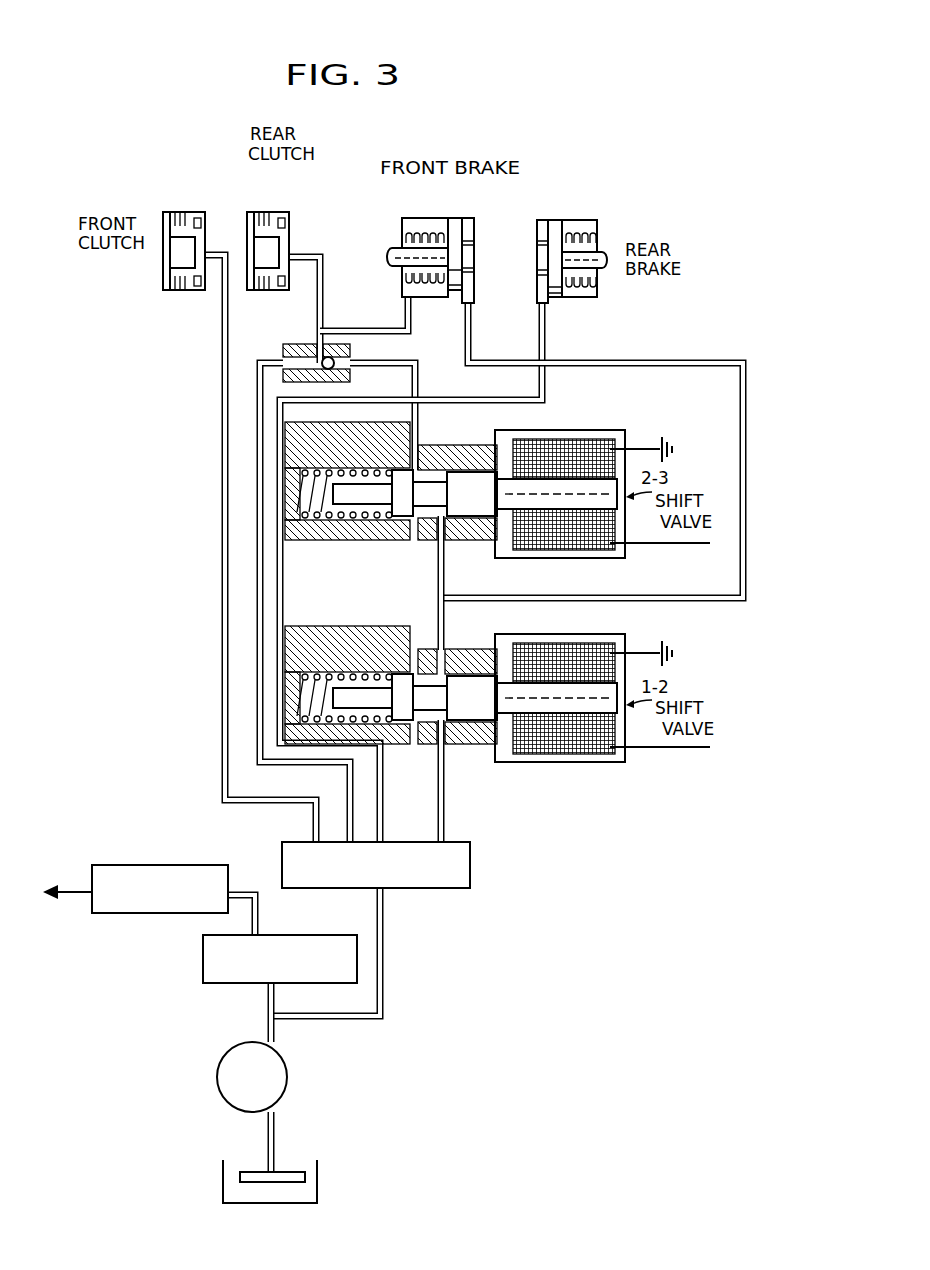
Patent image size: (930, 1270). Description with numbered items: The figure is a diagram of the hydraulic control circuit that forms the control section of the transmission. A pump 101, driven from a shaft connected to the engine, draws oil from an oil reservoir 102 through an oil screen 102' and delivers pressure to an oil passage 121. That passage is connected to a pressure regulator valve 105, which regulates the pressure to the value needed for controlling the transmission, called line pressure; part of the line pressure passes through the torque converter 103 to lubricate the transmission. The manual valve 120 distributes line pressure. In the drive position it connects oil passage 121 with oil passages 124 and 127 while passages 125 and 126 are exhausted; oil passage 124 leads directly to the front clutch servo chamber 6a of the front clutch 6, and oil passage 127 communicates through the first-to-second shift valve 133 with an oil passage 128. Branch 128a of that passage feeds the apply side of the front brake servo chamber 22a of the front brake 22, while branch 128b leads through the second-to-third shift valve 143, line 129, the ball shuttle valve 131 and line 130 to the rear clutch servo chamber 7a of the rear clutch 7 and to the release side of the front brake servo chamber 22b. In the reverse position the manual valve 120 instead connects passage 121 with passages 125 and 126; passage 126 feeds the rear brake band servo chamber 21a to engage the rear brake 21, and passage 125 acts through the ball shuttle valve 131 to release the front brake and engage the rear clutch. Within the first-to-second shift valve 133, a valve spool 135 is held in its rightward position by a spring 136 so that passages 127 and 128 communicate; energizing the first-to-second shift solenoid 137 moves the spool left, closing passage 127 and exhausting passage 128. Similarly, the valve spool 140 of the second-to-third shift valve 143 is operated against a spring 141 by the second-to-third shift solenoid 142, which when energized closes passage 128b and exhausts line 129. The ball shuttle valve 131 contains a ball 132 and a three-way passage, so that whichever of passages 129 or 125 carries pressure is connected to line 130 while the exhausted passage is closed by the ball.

The front clutch 6 is at (187, 208).
The front clutch servo chamber 6a is at (197, 242).
The rear clutch 7 is at (270, 208).
The rear clutch servo chamber 7a is at (282, 242).
The rear brake 21 is at (603, 226).
The rear brake band servo chamber 21a is at (542, 228).
The front brake 22 is at (396, 234).
The front brake servo chamber (brake band apply side) 22a is at (468, 227).
The front brake servo chamber (brake band release side) 22b is at (420, 228).
The pump 101 is at (287, 1085).
The oil reservoir 102 is at (306, 1181).
The oil screen 102' is at (308, 1156).
The torque converter 103 is at (163, 915).
The pressure regulator valve 105 is at (222, 985).
The manual valve 120 is at (470, 866).
The oil passage 121 is at (332, 1019).
The oil passage 124 is at (225, 385).
The oil passage 125 is at (258, 445).
The oil passage 126 is at (380, 808).
The oil passage 127 is at (443, 808).
The oil passage 128 is at (391, 673).
The branch of oil passage 128 128a is at (526, 600).
The branch of oil passage 128 128b is at (438, 565).
The oil passage (line) 129 is at (418, 432).
The oil passage (line) 130 is at (318, 305).
The ball shuttle valve 131 is at (337, 368).
The ball 132 is at (340, 354).
The 1-2 shift valve 133 is at (475, 629).
The valve spool 135 is at (403, 720).
The spring 136 is at (322, 680).
The 1-2 shift solenoid 137 is at (590, 762).
The valve spool 140 is at (482, 526).
The spring 141 is at (333, 520).
The 2-3 shift solenoid 142 is at (596, 548).
The 2-3 shift valve 143 is at (410, 564).